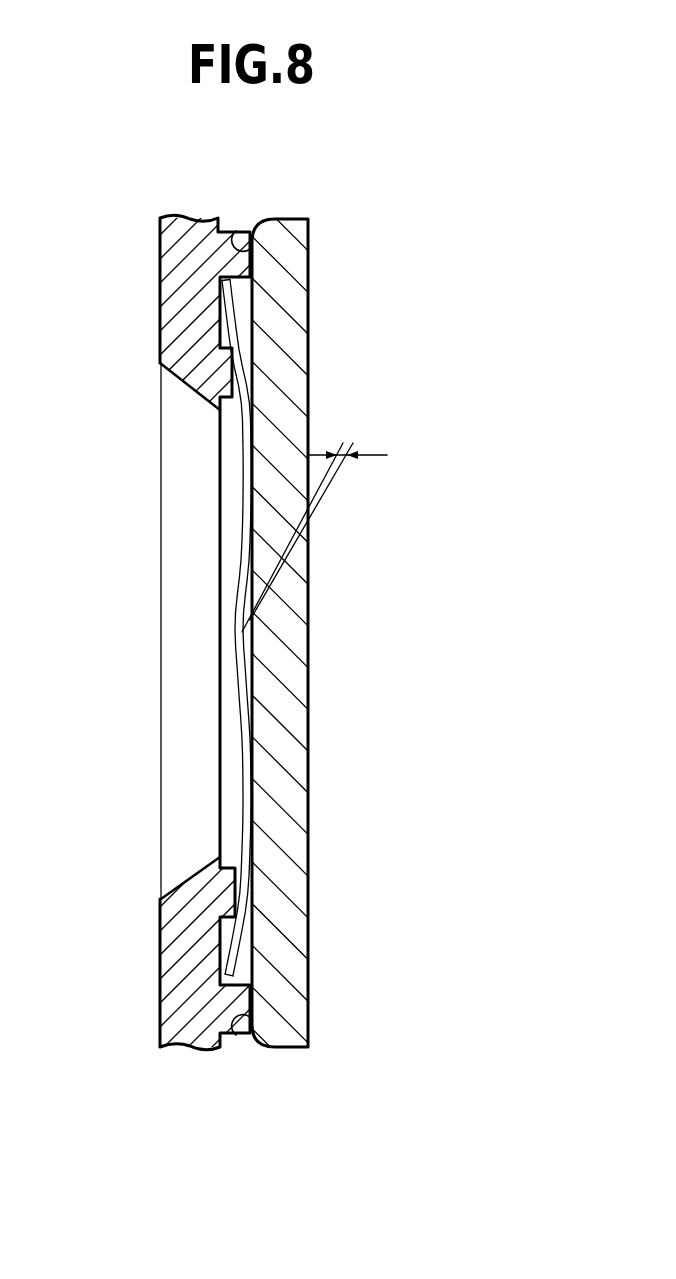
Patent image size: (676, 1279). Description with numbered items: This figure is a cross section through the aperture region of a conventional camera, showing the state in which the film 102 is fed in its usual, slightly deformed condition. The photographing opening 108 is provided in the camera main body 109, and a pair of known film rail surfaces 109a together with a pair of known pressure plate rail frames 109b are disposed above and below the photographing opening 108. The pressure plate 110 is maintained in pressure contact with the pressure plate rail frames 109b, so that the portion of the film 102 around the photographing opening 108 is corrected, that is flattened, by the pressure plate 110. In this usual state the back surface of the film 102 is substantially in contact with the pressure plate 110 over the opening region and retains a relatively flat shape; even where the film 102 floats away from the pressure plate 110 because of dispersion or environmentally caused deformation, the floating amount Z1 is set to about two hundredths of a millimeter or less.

The film 102 is at (237, 677).
The photographing opening 108 is at (198, 825).
The camera main body 109 is at (160, 270).
The film rail surfaces 109a is at (220, 381).
The pressure plate rail frames 109b is at (236, 231).
The pressure plate 110 is at (310, 262).
The floating amount Z1 is at (343, 443).